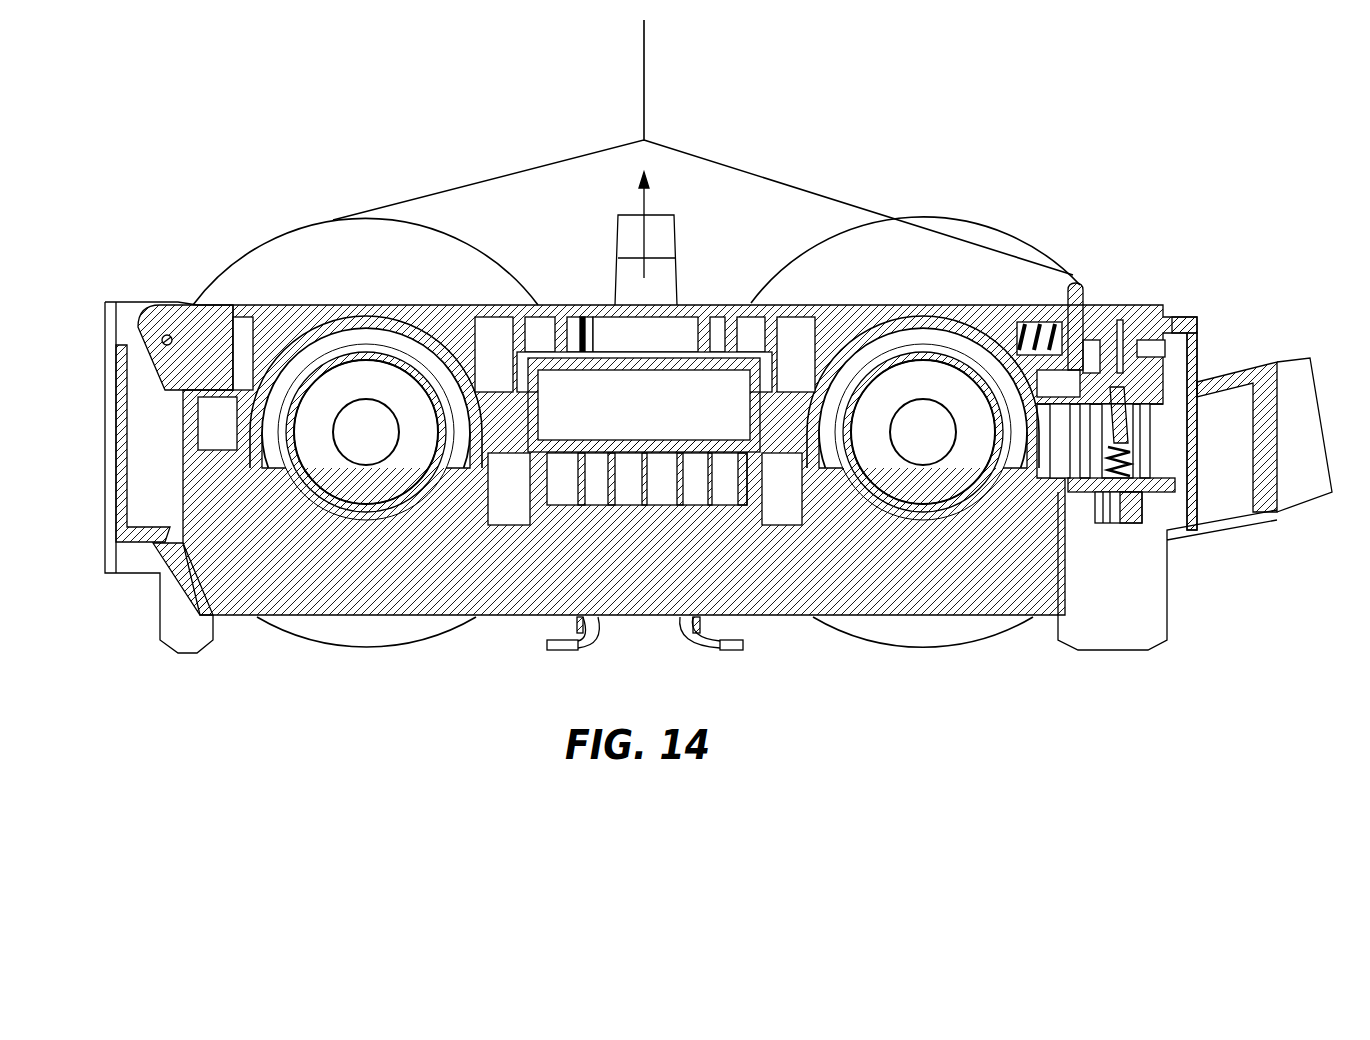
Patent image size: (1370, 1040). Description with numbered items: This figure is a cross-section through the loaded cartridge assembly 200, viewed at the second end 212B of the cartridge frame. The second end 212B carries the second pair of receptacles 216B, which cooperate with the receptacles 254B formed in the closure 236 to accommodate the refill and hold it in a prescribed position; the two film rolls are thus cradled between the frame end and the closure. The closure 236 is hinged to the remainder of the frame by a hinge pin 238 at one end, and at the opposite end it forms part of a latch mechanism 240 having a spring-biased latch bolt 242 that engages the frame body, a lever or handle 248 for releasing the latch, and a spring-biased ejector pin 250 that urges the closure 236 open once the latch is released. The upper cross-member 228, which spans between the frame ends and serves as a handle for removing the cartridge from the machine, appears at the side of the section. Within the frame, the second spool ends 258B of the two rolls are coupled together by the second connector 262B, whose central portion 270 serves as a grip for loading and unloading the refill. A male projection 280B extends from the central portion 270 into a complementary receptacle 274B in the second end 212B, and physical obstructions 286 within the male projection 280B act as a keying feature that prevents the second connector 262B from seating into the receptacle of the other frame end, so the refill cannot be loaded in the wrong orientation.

The cartridge assembly 200 is at (1126, 150).
The second end 212B is at (997, 572).
The second pair of receptacles 216B is at (383, 490).
The upper cross-member 228 is at (1268, 403).
The closure 236 is at (797, 320).
The hinge pin 238 is at (150, 323).
The latch mechanism 240 is at (1112, 296).
The latch bolt 242 is at (1130, 433).
The lever or handle 248 is at (1070, 277).
The ejector pin 250 is at (1199, 385).
The receptacles 254B is at (367, 320).
The second spool end 258B is at (322, 350).
The second connector 262B is at (500, 376).
The central portion 270 is at (542, 362).
The receptacle 274B is at (570, 512).
The male projection 280B is at (757, 487).
The physical obstructions 286 is at (641, 490).